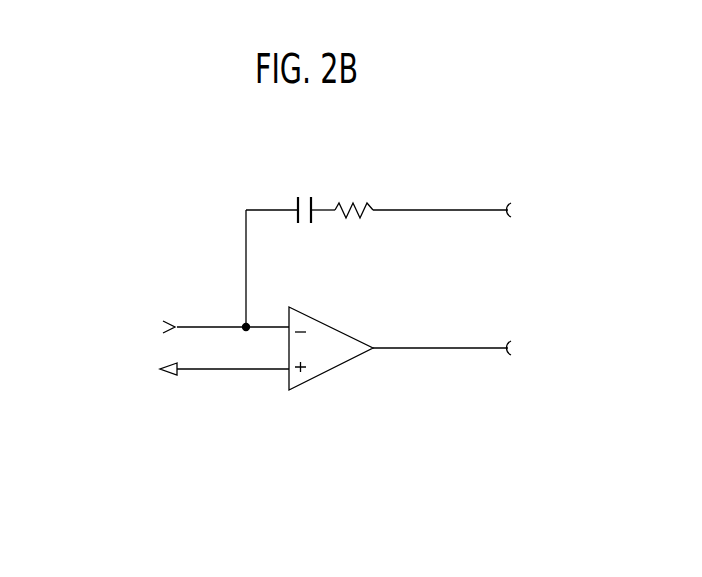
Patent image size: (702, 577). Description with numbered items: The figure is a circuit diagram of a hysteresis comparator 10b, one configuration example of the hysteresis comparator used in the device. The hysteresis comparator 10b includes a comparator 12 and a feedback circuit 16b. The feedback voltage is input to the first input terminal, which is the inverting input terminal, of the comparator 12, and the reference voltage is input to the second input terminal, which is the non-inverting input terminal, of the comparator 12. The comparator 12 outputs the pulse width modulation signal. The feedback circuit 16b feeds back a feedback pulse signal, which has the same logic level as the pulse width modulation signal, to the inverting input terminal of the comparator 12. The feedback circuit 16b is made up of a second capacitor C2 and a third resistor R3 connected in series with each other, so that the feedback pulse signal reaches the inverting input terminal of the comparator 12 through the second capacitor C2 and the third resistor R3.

The hysteresis comparator 10b is at (333, 523).
The comparator 12 is at (333, 369).
The feedback circuit 16b is at (332, 210).
The second capacitor C2 is at (306, 195).
The third resistor R3 is at (360, 200).